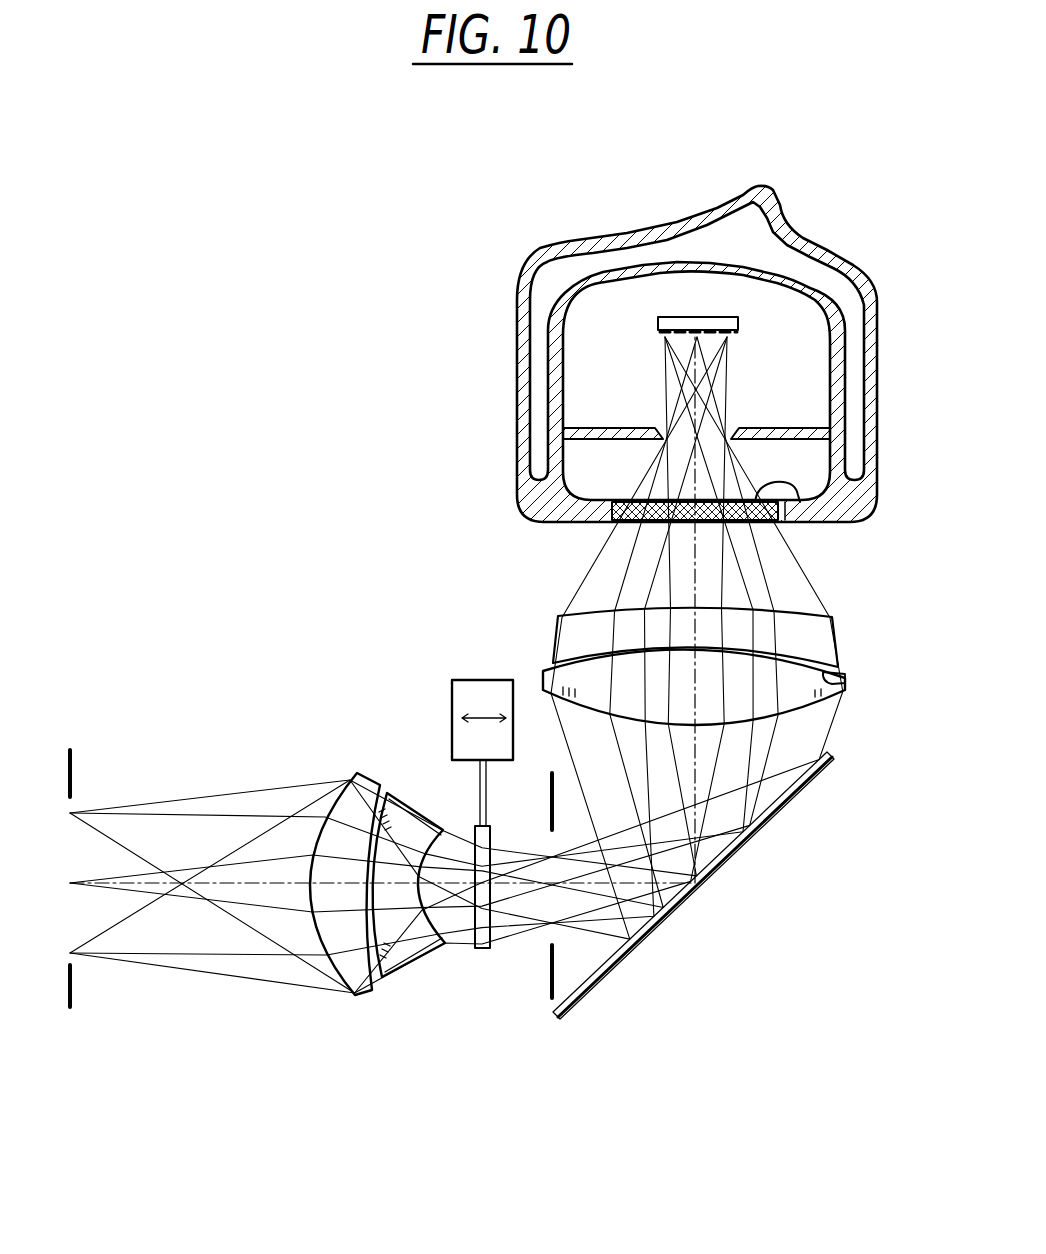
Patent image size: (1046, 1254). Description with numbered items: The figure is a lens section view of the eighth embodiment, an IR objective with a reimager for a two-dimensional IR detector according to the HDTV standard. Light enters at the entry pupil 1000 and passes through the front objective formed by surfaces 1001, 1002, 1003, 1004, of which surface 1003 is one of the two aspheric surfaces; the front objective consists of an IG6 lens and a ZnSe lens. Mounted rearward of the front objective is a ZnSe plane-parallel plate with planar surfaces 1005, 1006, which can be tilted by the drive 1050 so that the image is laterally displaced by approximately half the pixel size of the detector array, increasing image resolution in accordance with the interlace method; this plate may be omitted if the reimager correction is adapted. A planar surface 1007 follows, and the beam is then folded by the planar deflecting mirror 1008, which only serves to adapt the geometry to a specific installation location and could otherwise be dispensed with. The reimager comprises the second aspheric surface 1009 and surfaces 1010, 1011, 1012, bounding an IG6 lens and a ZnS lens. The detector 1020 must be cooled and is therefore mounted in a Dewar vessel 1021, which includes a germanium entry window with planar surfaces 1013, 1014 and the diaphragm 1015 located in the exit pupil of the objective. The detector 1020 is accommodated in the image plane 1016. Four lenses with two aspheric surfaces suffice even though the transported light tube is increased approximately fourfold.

The entry pupil 1000 is at (72, 988).
The front objective lens surface 1001 is at (340, 778).
The front objective lens surface 1002 is at (366, 995).
The aspheric surface 1003 is at (403, 800).
The front objective lens surface 1004 is at (455, 830).
The plane-parallel plate surface 1005 is at (463, 950).
The plane-parallel plate surface 1006 is at (507, 945).
The planar surface 1007 is at (552, 982).
The deflecting mirror 1008 is at (715, 878).
The aspheric surface 1009 is at (805, 712).
The reimager lens surface 1010 is at (845, 680).
The reimager lens surface 1011 is at (803, 648).
The reimager lens surface 1012 is at (808, 614).
The Ge entry window surface 1013 is at (617, 515).
The Ge entry window surface 1014 is at (804, 520).
The diaphragm 1015 is at (786, 412).
The image plane 1016 is at (737, 333).
The detector 1020 is at (658, 333).
The Dewar vessel 1021 is at (610, 243).
The drive 1050 is at (478, 690).